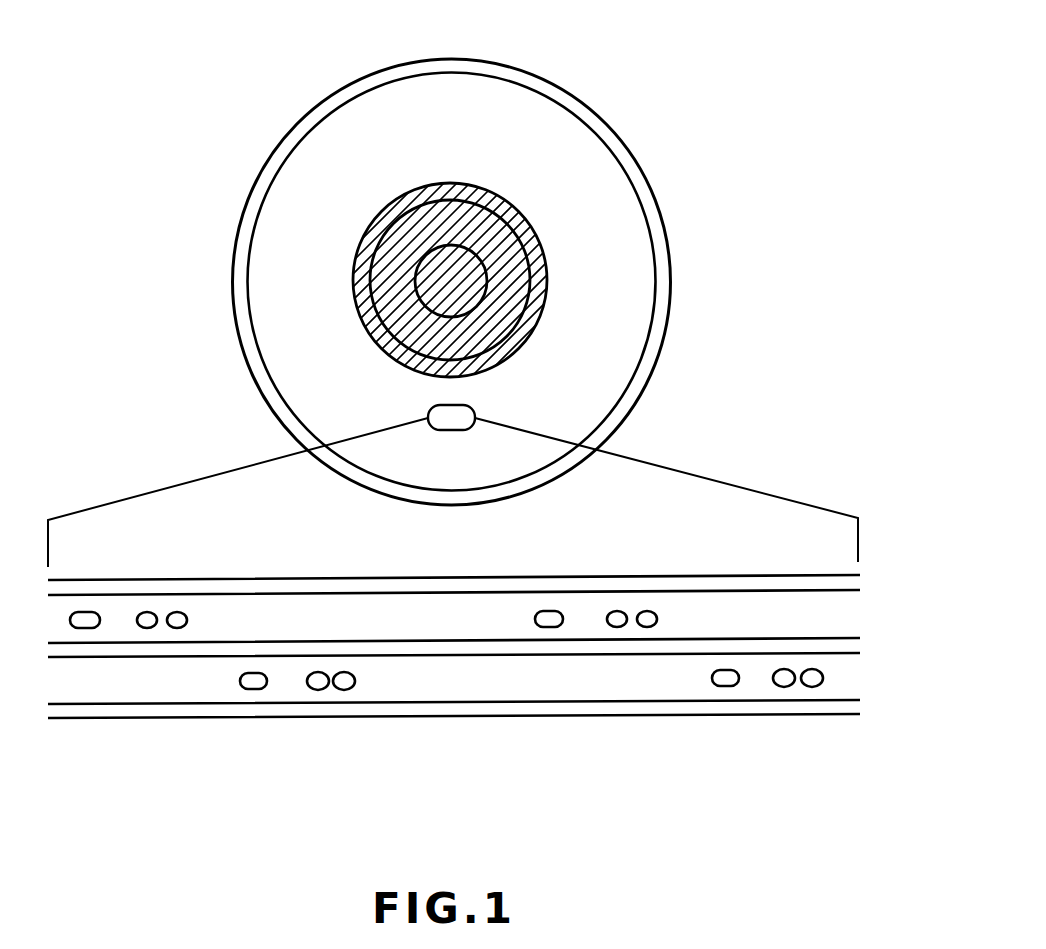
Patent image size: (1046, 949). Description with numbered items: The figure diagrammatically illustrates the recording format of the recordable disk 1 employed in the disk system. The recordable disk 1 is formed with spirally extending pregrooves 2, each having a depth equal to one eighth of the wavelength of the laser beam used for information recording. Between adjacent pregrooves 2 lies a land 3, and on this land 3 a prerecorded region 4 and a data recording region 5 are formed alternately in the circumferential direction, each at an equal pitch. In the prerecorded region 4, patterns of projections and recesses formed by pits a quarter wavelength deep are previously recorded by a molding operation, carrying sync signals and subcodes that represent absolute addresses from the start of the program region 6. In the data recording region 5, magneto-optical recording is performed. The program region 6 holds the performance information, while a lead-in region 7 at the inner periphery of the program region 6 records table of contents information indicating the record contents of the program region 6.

The recordable disk 1 is at (648, 153).
The pregrooves 2 is at (838, 707).
The land 3 is at (743, 617).
The prerecorded region 4 is at (177, 616).
The data recording region 5 is at (300, 608).
The program region 6 is at (526, 136).
The lead-in region 7 is at (540, 274).